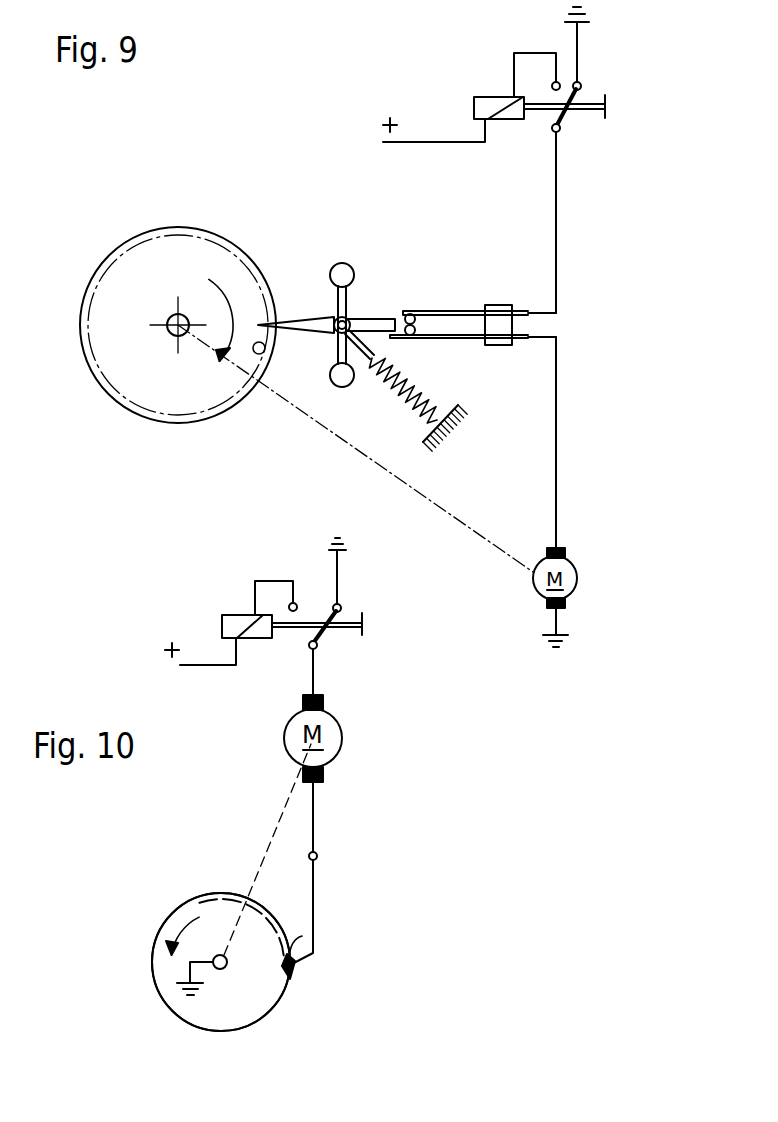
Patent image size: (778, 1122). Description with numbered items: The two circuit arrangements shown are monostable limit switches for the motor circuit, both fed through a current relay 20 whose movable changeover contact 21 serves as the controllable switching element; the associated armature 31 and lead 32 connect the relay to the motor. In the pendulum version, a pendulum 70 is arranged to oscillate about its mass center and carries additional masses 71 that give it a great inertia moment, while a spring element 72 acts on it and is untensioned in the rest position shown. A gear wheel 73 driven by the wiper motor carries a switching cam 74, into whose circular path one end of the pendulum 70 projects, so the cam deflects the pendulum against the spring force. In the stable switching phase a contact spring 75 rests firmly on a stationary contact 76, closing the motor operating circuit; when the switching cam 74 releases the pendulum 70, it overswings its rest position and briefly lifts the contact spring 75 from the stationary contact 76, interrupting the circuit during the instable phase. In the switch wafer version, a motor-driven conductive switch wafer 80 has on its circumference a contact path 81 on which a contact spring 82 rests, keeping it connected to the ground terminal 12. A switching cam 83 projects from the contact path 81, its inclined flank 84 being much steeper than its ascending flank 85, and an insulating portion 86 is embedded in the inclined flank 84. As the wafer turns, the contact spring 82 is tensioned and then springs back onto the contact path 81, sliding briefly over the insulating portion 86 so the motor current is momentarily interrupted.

In FIG. 10, the ground terminal 12 is at (185, 995).
In FIG. 9, the current relay 20 is at (510, 120).
In FIG. 10, the current relay 20 is at (227, 613).
In FIG. 9, the movable changeover contact 21 is at (563, 120).
In FIG. 10, the movable changeover contact 21 is at (318, 640).
In FIG. 9, the relay armature 31 is at (587, 100).
In FIG. 10, the relay armature 31 is at (350, 620).
In FIG. 9, the motor lead 32 is at (556, 262).
In FIG. 10, the motor lead 32 is at (315, 673).
In FIG. 9, the pendulum 70 is at (348, 319).
In FIG. 9, the additional masses 71 is at (346, 263).
In FIG. 9, the spring element 72 is at (433, 410).
In FIG. 9, the gear wheel 73 is at (208, 395).
In FIG. 9, the switching cam 74 is at (265, 352).
In FIG. 9, the contact spring 75 is at (410, 337).
In FIG. 9, the stationary contact 76 is at (408, 312).
In FIG. 10, the switch wafer 80 is at (267, 988).
In FIG. 10, the contact path 81 is at (245, 1029).
In FIG. 10, the contact spring 82 is at (313, 885).
In FIG. 10, the switching cam 83 is at (268, 913).
In FIG. 10, the inclined flank 84 is at (292, 972).
In FIG. 10, the ascending flank 85 is at (212, 895).
In FIG. 10, the insulating portion 86 is at (302, 936).